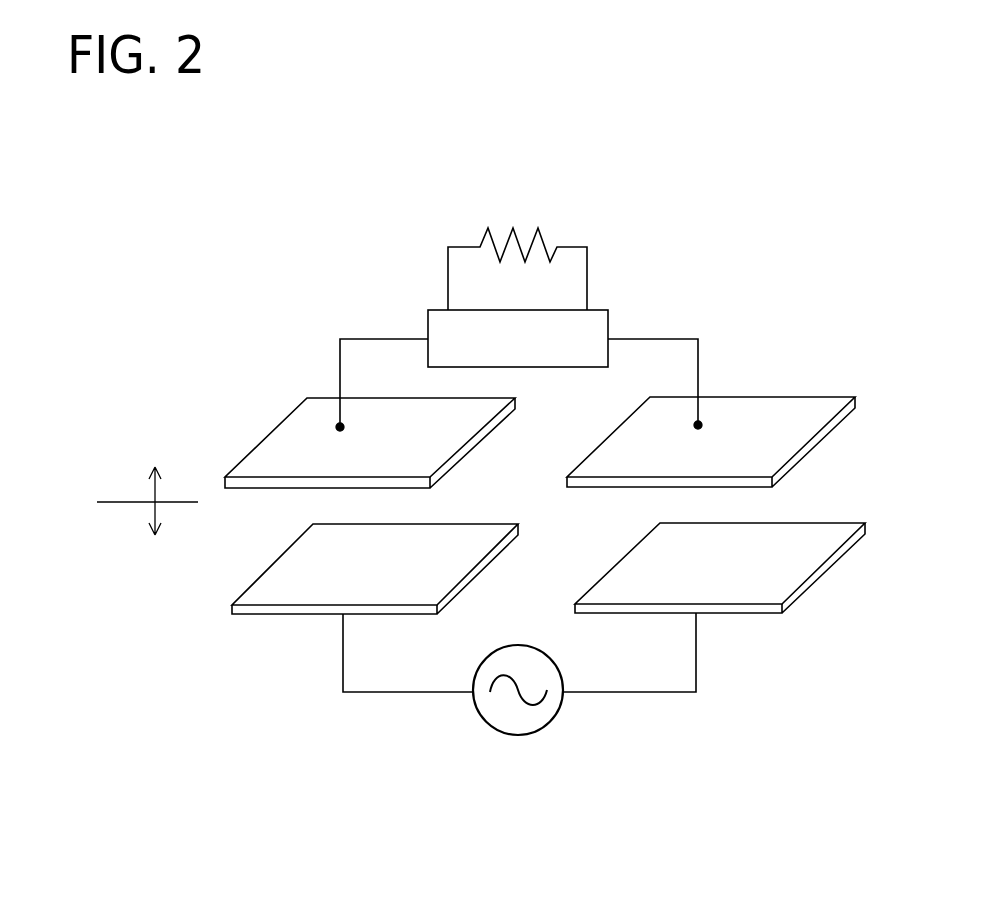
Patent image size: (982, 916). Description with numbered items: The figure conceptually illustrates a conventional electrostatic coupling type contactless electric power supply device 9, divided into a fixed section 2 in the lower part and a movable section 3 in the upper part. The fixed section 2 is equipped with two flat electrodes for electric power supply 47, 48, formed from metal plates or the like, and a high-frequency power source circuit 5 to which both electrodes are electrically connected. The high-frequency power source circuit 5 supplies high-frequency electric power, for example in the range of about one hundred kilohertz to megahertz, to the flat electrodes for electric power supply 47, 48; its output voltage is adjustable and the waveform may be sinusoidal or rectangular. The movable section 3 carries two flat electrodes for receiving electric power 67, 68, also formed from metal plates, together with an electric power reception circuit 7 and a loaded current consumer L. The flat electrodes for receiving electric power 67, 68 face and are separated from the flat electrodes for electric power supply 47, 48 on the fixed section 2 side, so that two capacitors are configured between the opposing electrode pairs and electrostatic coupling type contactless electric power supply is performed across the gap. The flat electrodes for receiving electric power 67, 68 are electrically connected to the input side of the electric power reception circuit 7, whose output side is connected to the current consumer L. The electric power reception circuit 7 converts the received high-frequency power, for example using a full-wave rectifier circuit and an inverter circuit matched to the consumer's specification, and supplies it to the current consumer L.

The electrostatic coupling type contactless electric power supply device 9 is at (195, 248).
The electric power reception circuit 7 is at (530, 352).
The movable section 3 is at (460, 407).
The fixed section 2 is at (465, 609).
The flat electrode for receiving electric power 67 is at (300, 437).
The flat electrode for receiving electric power 68 is at (767, 420).
The flat electrode for electric power supply 47 is at (266, 610).
The flat electrode for electric power supply 48 is at (757, 612).
The high-frequency power source circuit 5 is at (555, 718).